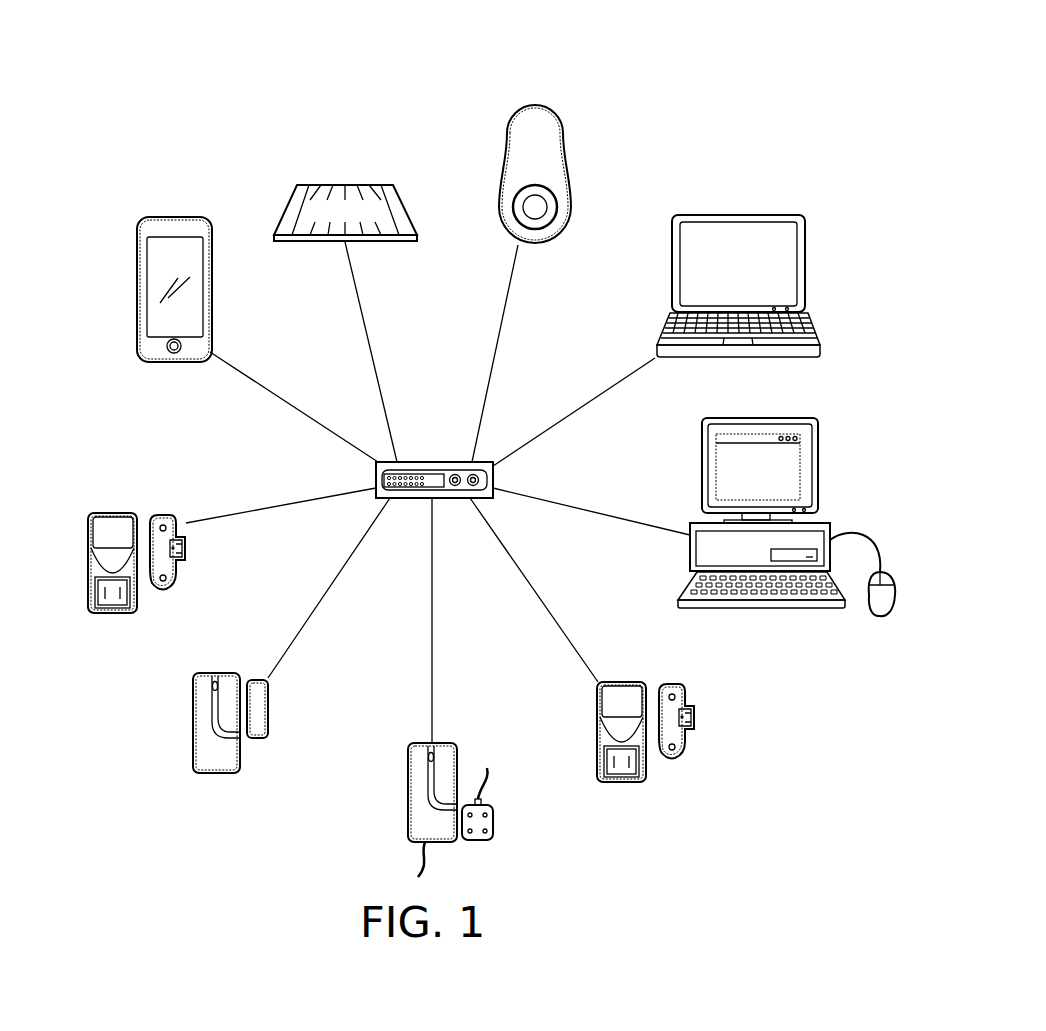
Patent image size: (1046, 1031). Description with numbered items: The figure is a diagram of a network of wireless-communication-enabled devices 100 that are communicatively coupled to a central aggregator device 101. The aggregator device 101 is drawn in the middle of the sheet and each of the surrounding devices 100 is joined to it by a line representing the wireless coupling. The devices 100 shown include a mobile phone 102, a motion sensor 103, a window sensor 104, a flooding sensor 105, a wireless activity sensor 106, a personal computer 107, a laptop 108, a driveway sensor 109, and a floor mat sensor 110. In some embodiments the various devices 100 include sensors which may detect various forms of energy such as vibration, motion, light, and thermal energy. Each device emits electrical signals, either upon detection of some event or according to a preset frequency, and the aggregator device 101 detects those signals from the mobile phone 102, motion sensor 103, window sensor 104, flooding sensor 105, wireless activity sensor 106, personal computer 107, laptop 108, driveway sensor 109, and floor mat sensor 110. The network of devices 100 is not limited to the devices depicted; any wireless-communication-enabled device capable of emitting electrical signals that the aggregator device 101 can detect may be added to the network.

The network of wireless-communication-enabled devices 100 is at (728, 70).
The aggregator device 101 is at (430, 462).
The mobile phone 102 is at (137, 292).
The motion sensor 103 is at (88, 553).
The window sensor 104 is at (193, 729).
The flooding sensor 105 is at (408, 797).
The wireless activity sensor 106 is at (622, 782).
The personal computer 107 is at (818, 467).
The laptop 108 is at (806, 265).
The driveway sensor 109 is at (568, 145).
The floor mat sensor 110 is at (333, 185).